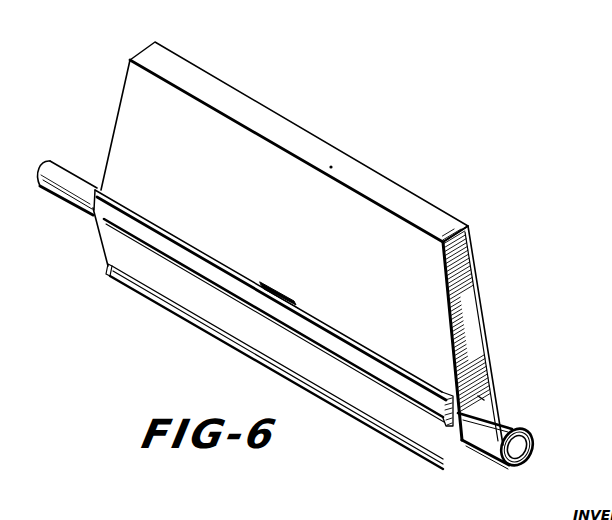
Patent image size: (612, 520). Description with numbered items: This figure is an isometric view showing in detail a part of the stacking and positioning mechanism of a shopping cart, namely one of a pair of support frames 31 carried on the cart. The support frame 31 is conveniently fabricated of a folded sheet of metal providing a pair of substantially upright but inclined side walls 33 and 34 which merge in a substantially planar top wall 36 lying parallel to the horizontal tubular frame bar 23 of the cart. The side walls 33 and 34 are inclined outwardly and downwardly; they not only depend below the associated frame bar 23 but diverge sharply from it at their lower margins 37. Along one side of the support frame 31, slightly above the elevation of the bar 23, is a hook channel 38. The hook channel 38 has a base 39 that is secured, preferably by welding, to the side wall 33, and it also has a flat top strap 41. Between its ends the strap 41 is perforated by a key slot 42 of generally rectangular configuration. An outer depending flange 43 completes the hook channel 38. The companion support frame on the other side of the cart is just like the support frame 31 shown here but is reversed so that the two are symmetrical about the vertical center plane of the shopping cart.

The support frame 31 is at (263, 99).
The flat top strap 41 is at (203, 249).
The key slot 42 is at (278, 283).
The outer depending flange 43 is at (92, 210).
The horizontal rail 23 is at (498, 461).
The side wall 33 is at (450, 321).
The side wall 34 is at (485, 316).
The top wall 36 is at (472, 317).
The base 39 is at (481, 398).
The lower margins 37 is at (443, 468).
The hook channel 38 is at (407, 397).